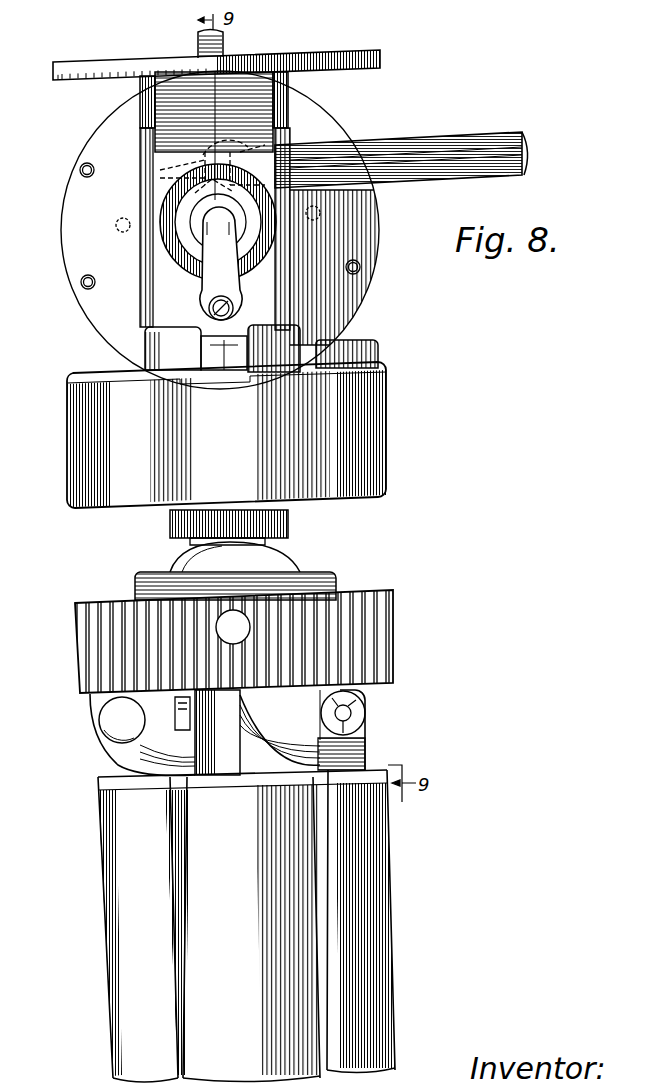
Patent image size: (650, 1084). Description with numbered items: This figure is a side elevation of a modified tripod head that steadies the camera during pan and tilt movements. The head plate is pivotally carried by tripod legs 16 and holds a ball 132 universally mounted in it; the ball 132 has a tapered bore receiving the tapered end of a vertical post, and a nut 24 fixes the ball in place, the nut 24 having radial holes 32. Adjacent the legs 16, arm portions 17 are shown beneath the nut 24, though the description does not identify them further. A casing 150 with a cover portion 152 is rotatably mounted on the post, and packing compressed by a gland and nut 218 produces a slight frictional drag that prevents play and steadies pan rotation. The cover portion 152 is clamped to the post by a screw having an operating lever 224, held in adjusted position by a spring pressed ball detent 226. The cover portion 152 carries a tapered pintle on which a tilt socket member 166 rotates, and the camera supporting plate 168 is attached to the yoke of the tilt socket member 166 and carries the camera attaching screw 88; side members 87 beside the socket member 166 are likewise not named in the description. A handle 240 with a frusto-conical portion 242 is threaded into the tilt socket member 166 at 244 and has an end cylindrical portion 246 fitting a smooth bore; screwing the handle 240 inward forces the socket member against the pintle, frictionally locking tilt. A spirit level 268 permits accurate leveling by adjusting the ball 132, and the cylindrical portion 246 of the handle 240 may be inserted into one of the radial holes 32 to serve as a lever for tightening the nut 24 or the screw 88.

The tripod legs 16 is at (375, 839).
The spider arms 17 is at (125, 765).
The nut 24 is at (385, 653).
The radial holes 32 is at (233, 627).
The posts 87 is at (286, 108).
The camera attaching screw 88 is at (224, 50).
The ball 132 is at (270, 562).
The casing 150 is at (226, 435).
The cover portion 152 is at (258, 303).
The tilt socket member 166 is at (262, 97).
The camera supporting plate 168 is at (305, 58).
The nut 218 is at (287, 525).
The operating lever 224 is at (213, 280).
The spring pressed ball detent 226 is at (206, 334).
The handle 240 is at (492, 172).
The frusto-conical portion 242 is at (242, 155).
The threaded portion of tilt socket member 244 is at (306, 204).
The end cylindrical portion 246 is at (152, 178).
The spirit level 268 is at (360, 355).